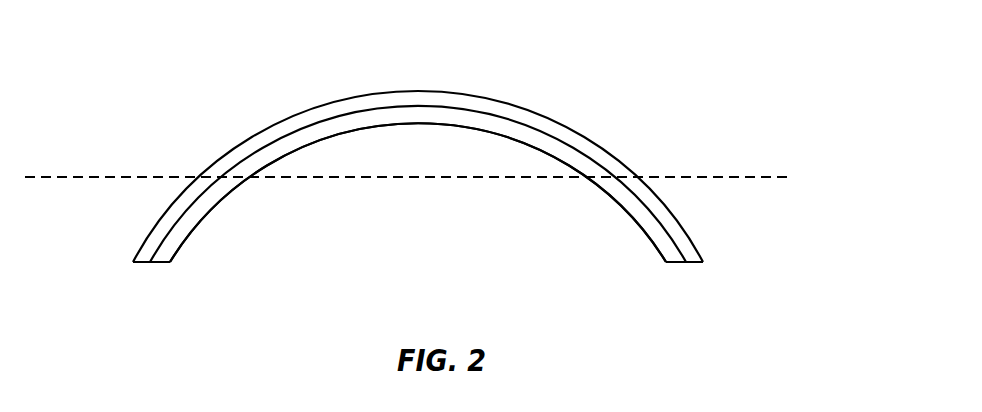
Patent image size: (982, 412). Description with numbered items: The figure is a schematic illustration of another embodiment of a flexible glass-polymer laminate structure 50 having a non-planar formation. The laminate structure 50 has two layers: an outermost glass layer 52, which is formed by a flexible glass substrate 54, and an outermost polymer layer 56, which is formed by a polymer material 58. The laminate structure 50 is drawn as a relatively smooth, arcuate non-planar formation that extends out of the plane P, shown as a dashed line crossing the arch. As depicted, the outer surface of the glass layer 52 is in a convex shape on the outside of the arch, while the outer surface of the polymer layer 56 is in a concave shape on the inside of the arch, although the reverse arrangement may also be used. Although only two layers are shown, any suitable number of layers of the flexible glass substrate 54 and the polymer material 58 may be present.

The flexible glass-polymer laminate structure 50 is at (458, 171).
The outermost glass layer 52 is at (709, 224).
The flexible glass substrate 54 is at (660, 206).
The outermost polymer layer 56 is at (195, 258).
The polymer material 58 is at (200, 212).
The plane P is at (77, 175).